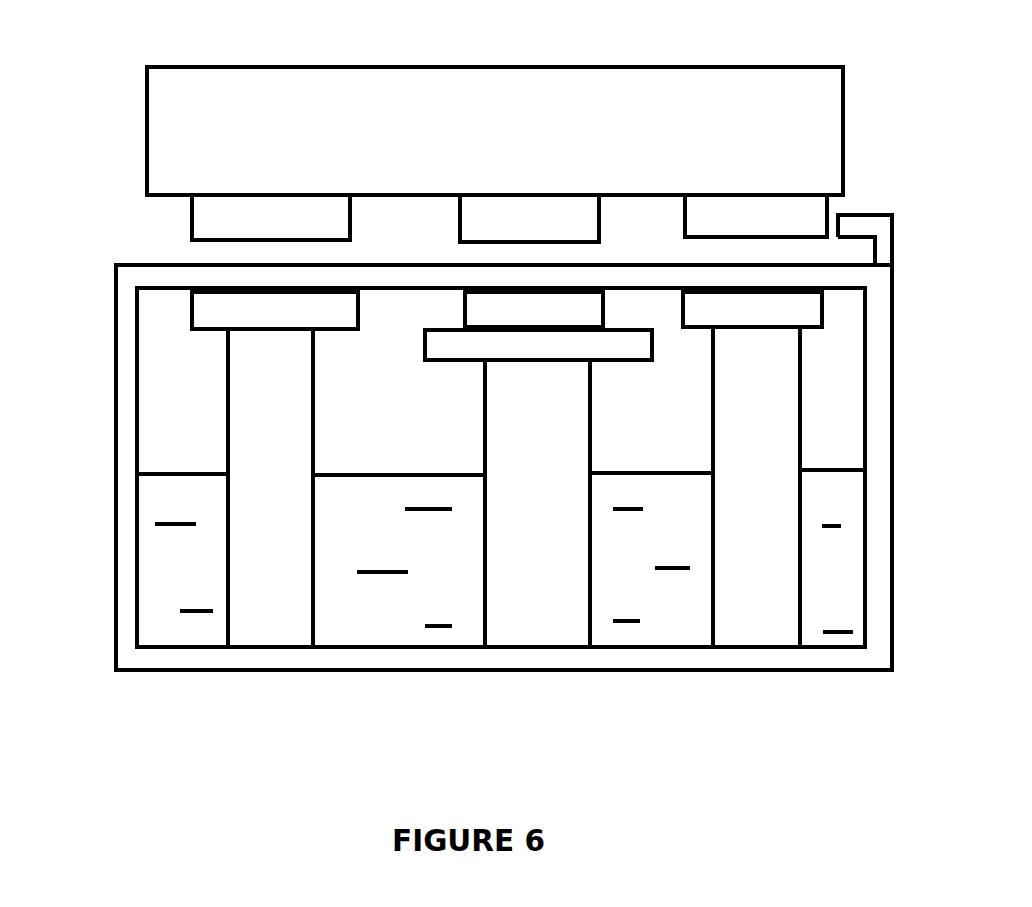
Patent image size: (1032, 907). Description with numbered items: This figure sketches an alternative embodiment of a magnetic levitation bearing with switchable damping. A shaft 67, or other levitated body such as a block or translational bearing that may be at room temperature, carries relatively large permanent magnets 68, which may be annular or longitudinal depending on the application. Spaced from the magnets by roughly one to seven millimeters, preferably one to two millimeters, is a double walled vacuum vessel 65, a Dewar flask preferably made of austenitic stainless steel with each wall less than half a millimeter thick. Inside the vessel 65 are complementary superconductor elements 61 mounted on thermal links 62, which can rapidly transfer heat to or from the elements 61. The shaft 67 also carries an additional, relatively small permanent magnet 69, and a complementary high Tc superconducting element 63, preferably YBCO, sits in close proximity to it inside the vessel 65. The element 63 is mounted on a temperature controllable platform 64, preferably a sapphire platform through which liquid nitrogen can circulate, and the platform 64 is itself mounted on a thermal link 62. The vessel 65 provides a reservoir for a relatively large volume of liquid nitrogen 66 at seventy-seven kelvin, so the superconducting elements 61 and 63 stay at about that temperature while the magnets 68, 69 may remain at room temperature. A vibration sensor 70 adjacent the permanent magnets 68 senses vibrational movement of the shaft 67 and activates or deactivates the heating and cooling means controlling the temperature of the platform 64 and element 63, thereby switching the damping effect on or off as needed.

The superconductor elements 61 is at (503, 341).
The thermal links 62 is at (482, 487).
The high Tc superconducting element 63 is at (477, 344).
The temperature controllable platform 64 is at (503, 488).
The double walled vacuum vessel 65 is at (462, 467).
The liquid nitrogen 66 is at (451, 551).
The shaft 67 is at (495, 104).
The permanent magnets 68 is at (509, 130).
The small permanent magnet 69 is at (493, 222).
The vibration sensor 70 is at (878, 207).